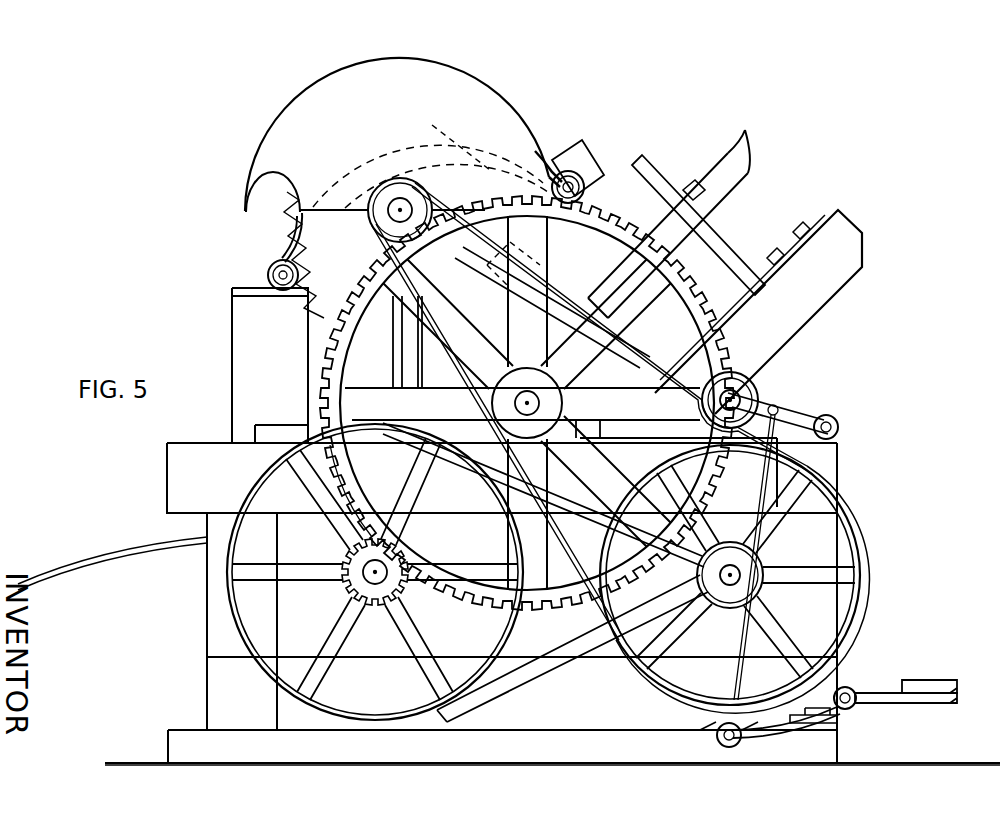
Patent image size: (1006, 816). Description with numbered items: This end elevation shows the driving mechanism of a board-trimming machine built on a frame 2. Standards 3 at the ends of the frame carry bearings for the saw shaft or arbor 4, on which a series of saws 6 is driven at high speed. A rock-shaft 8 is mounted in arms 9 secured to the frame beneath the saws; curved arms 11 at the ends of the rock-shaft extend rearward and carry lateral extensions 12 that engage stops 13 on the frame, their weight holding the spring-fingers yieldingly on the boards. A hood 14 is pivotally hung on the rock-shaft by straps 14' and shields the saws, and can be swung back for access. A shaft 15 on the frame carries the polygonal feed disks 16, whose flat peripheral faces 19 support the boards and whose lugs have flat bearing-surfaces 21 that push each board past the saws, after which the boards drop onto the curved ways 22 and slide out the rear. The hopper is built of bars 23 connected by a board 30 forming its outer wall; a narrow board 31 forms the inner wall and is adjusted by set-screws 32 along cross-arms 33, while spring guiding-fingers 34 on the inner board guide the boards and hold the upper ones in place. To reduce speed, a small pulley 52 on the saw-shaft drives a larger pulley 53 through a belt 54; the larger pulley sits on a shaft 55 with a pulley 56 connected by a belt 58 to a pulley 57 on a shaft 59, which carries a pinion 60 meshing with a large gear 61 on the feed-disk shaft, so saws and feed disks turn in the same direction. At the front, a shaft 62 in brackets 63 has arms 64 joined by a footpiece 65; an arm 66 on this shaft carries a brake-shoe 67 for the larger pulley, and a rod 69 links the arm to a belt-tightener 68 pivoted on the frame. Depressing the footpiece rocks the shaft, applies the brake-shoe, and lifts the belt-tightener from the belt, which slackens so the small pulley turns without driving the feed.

The frame 2 is at (207, 630).
The standards 3 is at (527, 403).
The saw shaft or arbor 4 is at (404, 208).
The saws 6 is at (288, 200).
The rock-shaft 8 is at (573, 179).
The arms 9 is at (588, 188).
The curved arms 11 is at (311, 228).
The lateral extensions 12 is at (270, 265).
The stops 13 is at (232, 322).
The hood 14 is at (397, 126).
The straps 14' is at (565, 146).
The shaft 15 is at (523, 396).
The feed disks or plates 16 is at (527, 403).
The flat peripheral faces 19 is at (597, 263).
The flat bearing-surfaces 21 is at (566, 230).
The curved ways 22 is at (115, 567).
The bars 23 is at (822, 288).
The board 30 is at (838, 222).
The narrow board or bar 31 is at (662, 208).
The set-screws 32 is at (697, 187).
The cross-arms 33 is at (714, 252).
The spring guiding-fingers 34 is at (724, 190).
The small pulley 52 is at (388, 197).
The larger pulley 53 is at (852, 538).
The belt 54 is at (847, 508).
The shaft 55 is at (760, 578).
The pulley 56 is at (752, 562).
The pulley 57 is at (372, 708).
The belt 58 is at (526, 663).
The shaft 59 is at (376, 588).
The pinion 60 is at (350, 557).
The large gear 61 is at (366, 506).
The shaft 62 is at (852, 693).
The brackets 63 is at (838, 718).
The arms 64 is at (893, 690).
The footpiece 65 is at (940, 684).
The arm 66 is at (776, 724).
The brake-shoe 67 is at (711, 722).
The belt-tightener 68 is at (790, 410).
The rod 69 is at (832, 418).